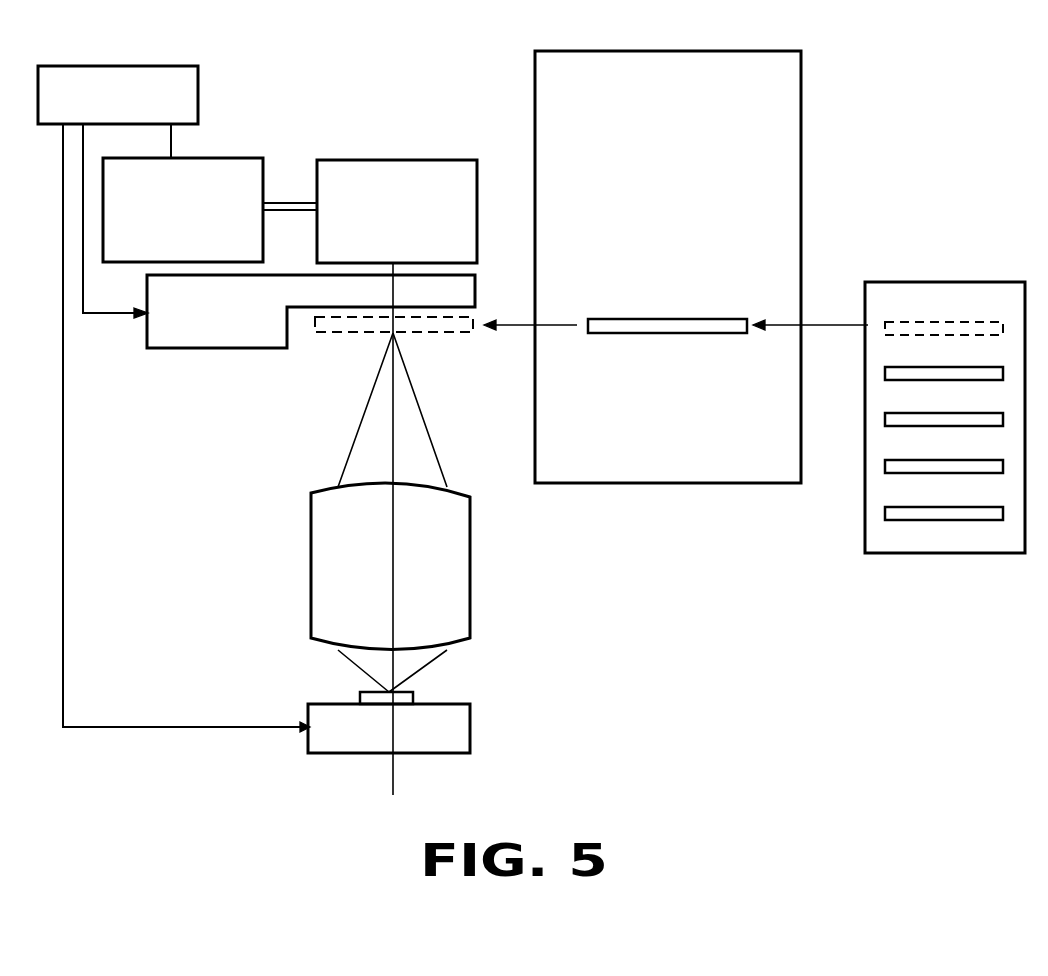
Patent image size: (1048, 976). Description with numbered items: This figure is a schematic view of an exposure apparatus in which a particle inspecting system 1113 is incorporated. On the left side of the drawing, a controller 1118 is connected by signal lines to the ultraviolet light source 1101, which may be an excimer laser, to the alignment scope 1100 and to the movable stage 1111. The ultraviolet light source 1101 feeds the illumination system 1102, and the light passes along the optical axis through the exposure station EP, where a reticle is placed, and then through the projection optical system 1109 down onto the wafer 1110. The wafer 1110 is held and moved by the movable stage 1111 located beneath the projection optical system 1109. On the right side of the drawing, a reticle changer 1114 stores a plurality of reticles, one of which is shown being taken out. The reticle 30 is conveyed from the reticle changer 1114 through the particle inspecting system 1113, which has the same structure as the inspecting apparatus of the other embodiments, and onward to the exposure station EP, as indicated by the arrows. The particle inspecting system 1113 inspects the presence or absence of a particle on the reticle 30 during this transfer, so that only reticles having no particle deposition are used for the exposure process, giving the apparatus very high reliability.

The controller 1118 is at (140, 66).
The ultraviolet light source 1101 is at (217, 158).
The illumination system 1102 is at (423, 160).
The alignment scope 1100 is at (196, 348).
The exposure station EP is at (338, 333).
The projection optical system 1109 is at (470, 530).
The wafer 1110 is at (414, 693).
The movable stage 1111 is at (470, 725).
The particle inspecting system 1113 is at (802, 90).
The reticle 30 is at (698, 319).
The reticle changer 1114 is at (975, 282).